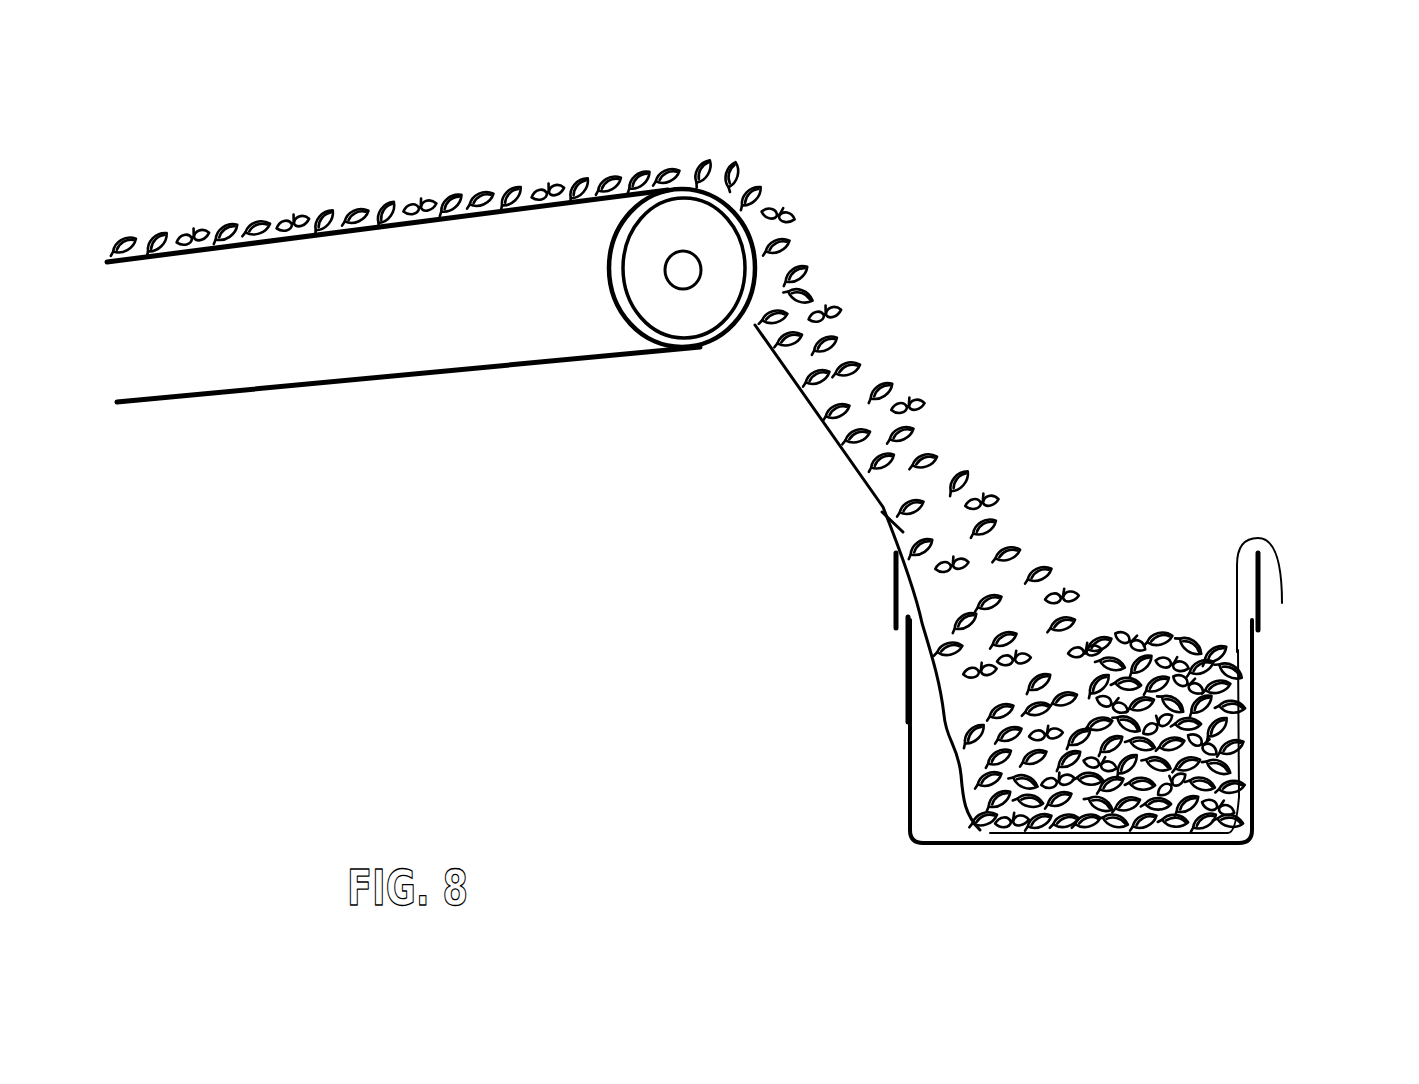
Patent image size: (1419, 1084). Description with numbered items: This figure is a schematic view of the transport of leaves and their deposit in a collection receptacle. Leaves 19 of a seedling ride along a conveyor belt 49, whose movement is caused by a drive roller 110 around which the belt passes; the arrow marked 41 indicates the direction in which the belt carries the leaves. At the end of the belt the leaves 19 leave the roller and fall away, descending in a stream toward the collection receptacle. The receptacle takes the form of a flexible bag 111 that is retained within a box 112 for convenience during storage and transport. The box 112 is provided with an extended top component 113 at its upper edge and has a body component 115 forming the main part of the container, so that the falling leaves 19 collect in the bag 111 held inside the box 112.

The leaves 19 is at (397, 207).
The conveyor direction 41 is at (236, 317).
The conveyor belt 49 is at (350, 381).
The drive roller 110 is at (623, 272).
The flexible bag 111 is at (914, 585).
The box 112 is at (1090, 690).
The extended top component 113 is at (1263, 612).
The body component 115 is at (906, 700).